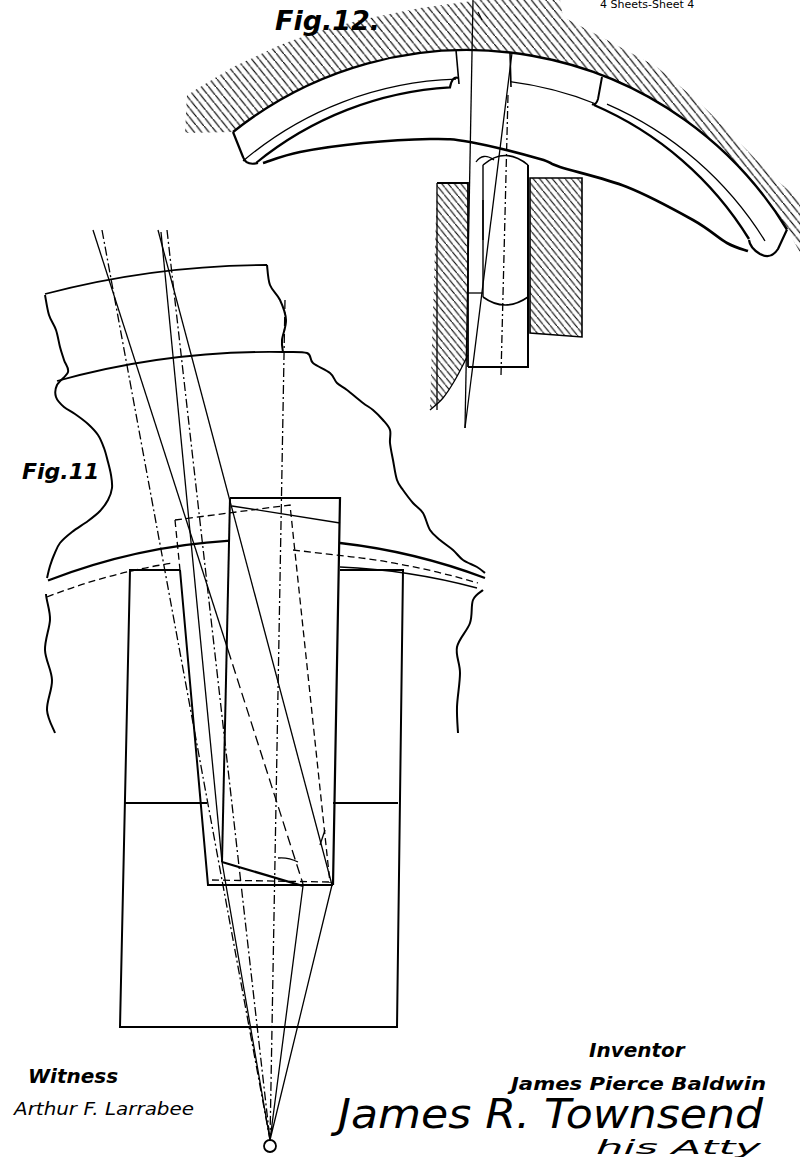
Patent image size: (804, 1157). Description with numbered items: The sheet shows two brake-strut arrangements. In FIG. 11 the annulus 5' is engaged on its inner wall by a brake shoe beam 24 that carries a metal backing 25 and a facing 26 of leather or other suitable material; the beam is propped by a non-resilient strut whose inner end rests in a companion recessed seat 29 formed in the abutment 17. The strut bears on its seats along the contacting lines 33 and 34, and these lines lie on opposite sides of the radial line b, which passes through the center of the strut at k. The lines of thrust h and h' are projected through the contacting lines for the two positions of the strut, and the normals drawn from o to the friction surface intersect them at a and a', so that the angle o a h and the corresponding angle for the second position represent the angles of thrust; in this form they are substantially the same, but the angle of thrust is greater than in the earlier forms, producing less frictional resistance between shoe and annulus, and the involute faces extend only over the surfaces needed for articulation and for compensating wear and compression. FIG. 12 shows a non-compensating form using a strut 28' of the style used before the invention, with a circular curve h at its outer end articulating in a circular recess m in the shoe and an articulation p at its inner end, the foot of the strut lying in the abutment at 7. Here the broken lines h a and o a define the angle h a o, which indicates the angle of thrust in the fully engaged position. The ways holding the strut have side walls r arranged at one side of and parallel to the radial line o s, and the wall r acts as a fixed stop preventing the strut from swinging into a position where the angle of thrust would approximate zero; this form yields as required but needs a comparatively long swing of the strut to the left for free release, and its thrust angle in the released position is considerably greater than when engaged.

In FIG. 12, the annulus 5' is at (496, 68).
In FIG. 12, the socket bottom 7 is at (498, 332).
In FIG. 11, the abutment 17 is at (261, 798).
In FIG. 12, the brake shoe beam 24 is at (482, 208).
In FIG. 12, the metal backing 25 is at (364, 105).
In FIG. 12, the facing 26 is at (510, 153).
In FIG. 12, the strut 28' is at (438, 222).
In FIG. 11, the recessed seat 29 is at (212, 868).
In FIG. 11, the contacting line 33 is at (230, 497).
In FIG. 11, the contacting line 34 is at (303, 887).
In FIG. 12, the intersection point a is at (456, 214).
In FIG. 11, the intersection point a is at (191, 685).
In FIG. 11, the intersection point a' is at (235, 685).
In FIG. 11, the radial line b is at (285, 720).
In FIG. 12, the line of thrust h is at (485, 345).
In FIG. 11, the line of thrust h is at (278, 857).
In FIG. 11, the line of thrust h' is at (340, 840).
In FIG. 12, the strut center k is at (505, 153).
In FIG. 12, the circular recess m is at (490, 160).
In FIG. 12, the normal origin o is at (485, 249).
In FIG. 11, the normal origin o is at (270, 1146).
In FIG. 12, the articulation p is at (483, 297).
In FIG. 12, the side wall r is at (445, 294).
In FIG. 12, the radial line point s is at (481, 10).